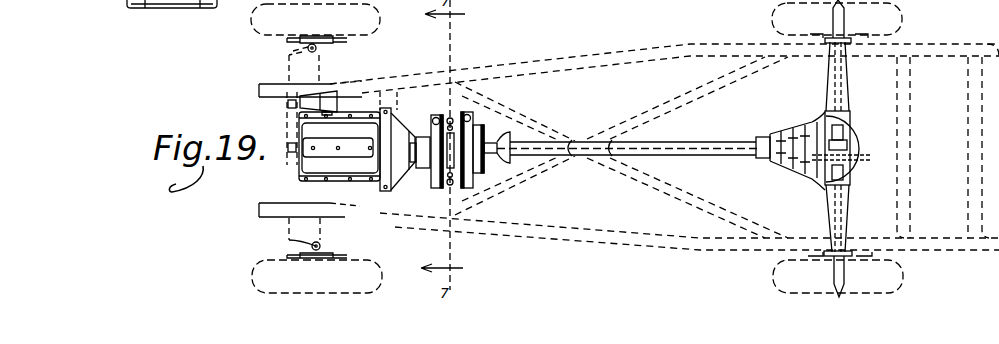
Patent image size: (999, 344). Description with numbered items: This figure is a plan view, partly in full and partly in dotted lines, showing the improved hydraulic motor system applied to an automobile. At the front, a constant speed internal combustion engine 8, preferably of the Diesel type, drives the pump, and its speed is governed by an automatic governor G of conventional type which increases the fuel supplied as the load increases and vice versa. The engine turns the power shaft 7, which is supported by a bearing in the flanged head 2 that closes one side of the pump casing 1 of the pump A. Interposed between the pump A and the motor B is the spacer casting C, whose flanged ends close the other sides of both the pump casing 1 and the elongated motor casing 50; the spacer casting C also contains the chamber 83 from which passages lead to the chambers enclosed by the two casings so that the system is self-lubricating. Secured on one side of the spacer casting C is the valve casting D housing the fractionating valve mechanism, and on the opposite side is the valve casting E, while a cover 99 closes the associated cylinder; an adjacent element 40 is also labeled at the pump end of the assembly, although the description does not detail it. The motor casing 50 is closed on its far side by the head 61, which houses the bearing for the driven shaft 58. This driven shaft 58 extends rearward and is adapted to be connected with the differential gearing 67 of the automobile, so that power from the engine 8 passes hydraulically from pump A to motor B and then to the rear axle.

The pump casing 1 is at (431, 187).
The flanged head 2 is at (424, 165).
The power shaft 7 is at (416, 150).
The internal combustion engine 8 is at (342, 122).
The clutch pressure plate 40 is at (433, 117).
The motor casing 50 is at (468, 188).
The driven shaft 58 is at (485, 127).
The head 61 is at (456, 153).
The differential gearing 67 is at (880, 119).
The chamber 83 is at (478, 150).
The cover 99 is at (470, 116).
The pump A is at (433, 112).
The motor B is at (468, 114).
The spacer casting C is at (458, 133).
The valve casting D is at (449, 181).
The valve casting E is at (450, 115).
The automatic governor G is at (336, 86).